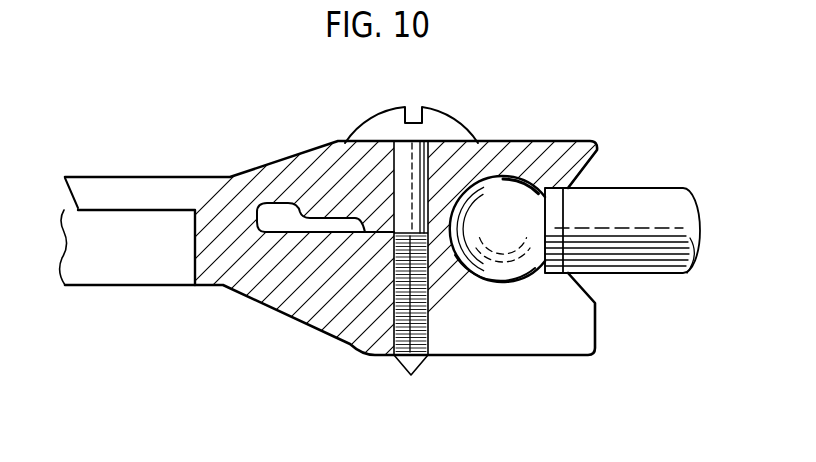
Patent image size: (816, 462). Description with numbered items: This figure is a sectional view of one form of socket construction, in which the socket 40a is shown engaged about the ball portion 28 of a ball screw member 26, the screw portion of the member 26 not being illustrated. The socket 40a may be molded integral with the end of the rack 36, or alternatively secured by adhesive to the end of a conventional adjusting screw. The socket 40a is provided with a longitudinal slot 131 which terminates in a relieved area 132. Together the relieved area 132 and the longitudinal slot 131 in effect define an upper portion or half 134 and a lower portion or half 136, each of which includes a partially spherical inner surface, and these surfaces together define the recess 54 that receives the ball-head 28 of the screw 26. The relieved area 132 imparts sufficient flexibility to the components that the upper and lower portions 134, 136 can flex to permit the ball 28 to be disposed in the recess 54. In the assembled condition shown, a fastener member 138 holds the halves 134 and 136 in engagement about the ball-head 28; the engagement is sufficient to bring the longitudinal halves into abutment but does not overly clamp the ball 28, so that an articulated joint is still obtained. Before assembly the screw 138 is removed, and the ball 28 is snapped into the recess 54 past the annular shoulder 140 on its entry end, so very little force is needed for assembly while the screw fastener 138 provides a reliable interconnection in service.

The ball screw member 26 is at (683, 200).
The ball portion 28 is at (505, 219).
The rack 36 is at (100, 262).
The socket 40a is at (511, 126).
The recess 54 is at (520, 272).
The longitudinal slot 131 is at (305, 222).
The relieved area 132 is at (272, 208).
The upper portion 134 is at (548, 141).
The lower portion 136 is at (493, 342).
The fastener member 138 is at (448, 122).
The annular shoulder 140 is at (600, 255).